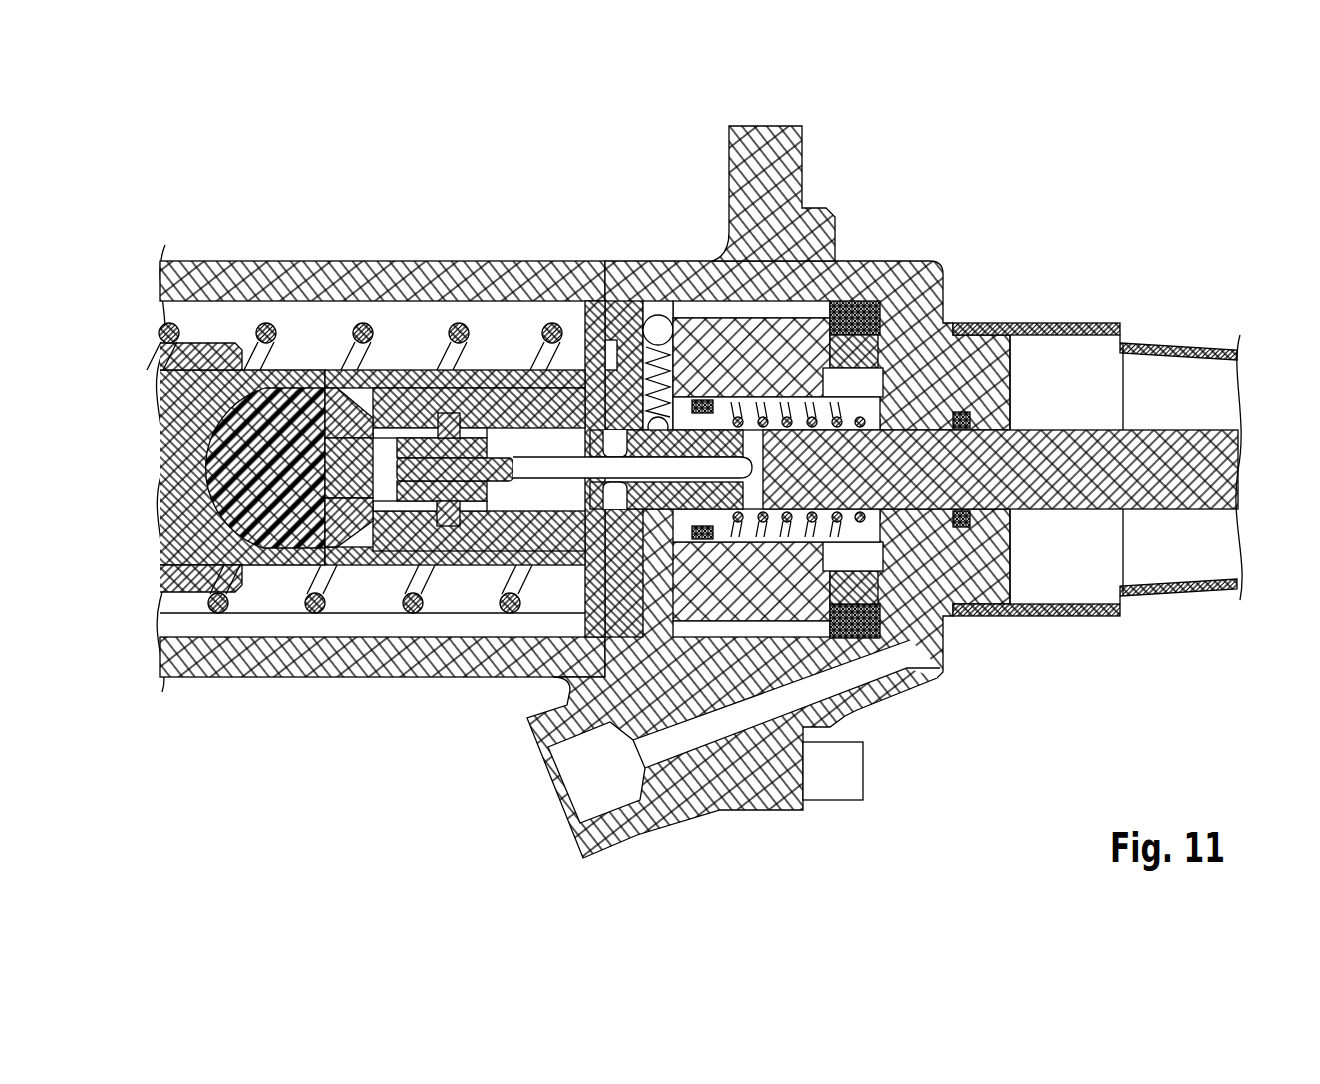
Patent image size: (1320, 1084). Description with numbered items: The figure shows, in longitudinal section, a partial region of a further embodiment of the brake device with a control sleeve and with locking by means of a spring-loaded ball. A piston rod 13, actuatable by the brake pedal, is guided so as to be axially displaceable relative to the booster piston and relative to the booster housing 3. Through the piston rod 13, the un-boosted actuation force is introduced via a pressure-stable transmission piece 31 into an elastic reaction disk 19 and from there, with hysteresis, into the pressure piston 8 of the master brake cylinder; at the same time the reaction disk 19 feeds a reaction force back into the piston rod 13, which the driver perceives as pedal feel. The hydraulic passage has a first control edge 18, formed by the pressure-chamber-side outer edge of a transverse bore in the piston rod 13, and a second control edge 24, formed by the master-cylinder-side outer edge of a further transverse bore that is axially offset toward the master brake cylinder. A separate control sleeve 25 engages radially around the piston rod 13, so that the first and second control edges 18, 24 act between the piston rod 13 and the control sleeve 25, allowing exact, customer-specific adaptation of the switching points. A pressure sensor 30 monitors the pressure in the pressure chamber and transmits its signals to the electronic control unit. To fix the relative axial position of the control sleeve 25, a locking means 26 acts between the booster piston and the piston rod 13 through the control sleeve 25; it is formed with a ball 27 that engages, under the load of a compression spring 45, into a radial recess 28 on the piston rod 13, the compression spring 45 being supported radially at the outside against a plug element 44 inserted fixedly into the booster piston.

The booster housing 3 is at (278, 283).
The pressure piston 8 is at (200, 534).
The piston rod 13 is at (1185, 472).
The first control edge 18 is at (790, 412).
The reaction disk 19 is at (283, 490).
The second control edge 24 is at (508, 440).
The control sleeve 25 is at (628, 523).
The locking means 26 is at (587, 397).
The ball 27 is at (800, 400).
The radial recess 28 is at (910, 428).
The pressure sensor 30 is at (845, 770).
The transmission piece 31 is at (363, 470).
The plug element 44 is at (657, 315).
The compression spring 45 is at (742, 328).